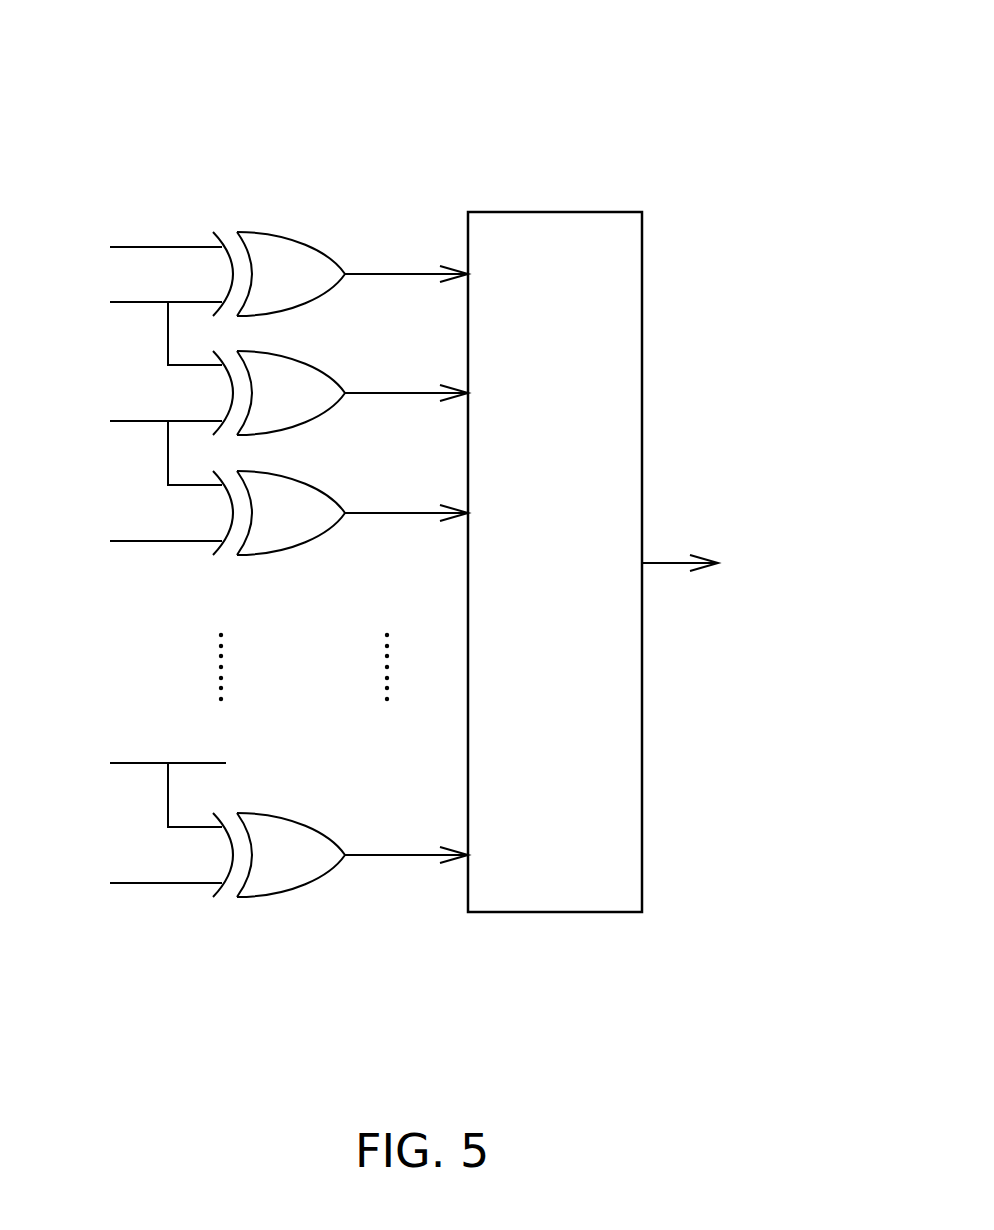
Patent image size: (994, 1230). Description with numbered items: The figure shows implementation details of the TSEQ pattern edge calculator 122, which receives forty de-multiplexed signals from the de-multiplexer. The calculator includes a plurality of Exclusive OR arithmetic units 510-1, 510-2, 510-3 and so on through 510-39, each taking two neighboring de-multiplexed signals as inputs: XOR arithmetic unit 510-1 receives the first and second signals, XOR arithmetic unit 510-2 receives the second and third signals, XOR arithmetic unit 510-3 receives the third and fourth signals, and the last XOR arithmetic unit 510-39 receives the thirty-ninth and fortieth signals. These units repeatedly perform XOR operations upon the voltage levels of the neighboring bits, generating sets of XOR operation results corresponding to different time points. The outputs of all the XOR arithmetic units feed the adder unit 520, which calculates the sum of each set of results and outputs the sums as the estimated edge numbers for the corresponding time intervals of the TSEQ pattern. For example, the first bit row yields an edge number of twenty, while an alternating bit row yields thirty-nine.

The TSEQ pattern edge calculator 122 is at (686, 82).
The Exclusive OR (XOR) arithmetic unit 510-1 is at (292, 233).
The Exclusive OR (XOR) arithmetic unit 510-2 is at (292, 352).
The Exclusive OR (XOR) arithmetic unit 510-3 is at (292, 471).
The Exclusive OR (XOR) arithmetic unit 510-39 is at (292, 813).
The adder unit 520 is at (553, 212).